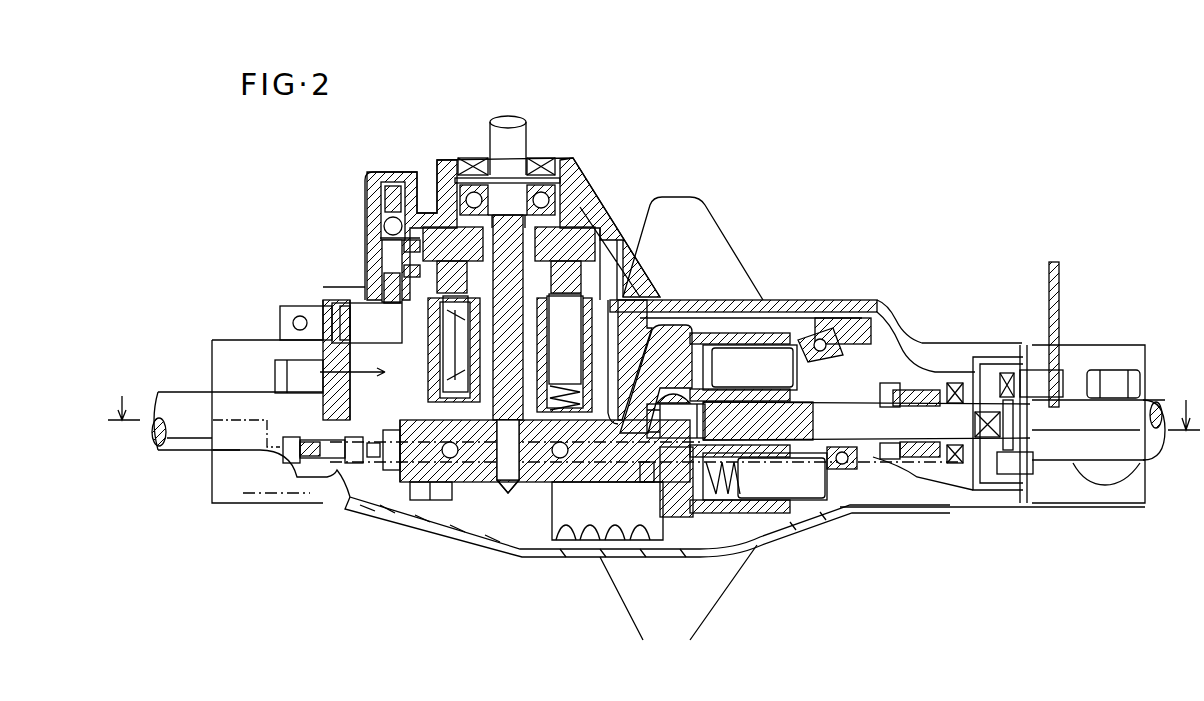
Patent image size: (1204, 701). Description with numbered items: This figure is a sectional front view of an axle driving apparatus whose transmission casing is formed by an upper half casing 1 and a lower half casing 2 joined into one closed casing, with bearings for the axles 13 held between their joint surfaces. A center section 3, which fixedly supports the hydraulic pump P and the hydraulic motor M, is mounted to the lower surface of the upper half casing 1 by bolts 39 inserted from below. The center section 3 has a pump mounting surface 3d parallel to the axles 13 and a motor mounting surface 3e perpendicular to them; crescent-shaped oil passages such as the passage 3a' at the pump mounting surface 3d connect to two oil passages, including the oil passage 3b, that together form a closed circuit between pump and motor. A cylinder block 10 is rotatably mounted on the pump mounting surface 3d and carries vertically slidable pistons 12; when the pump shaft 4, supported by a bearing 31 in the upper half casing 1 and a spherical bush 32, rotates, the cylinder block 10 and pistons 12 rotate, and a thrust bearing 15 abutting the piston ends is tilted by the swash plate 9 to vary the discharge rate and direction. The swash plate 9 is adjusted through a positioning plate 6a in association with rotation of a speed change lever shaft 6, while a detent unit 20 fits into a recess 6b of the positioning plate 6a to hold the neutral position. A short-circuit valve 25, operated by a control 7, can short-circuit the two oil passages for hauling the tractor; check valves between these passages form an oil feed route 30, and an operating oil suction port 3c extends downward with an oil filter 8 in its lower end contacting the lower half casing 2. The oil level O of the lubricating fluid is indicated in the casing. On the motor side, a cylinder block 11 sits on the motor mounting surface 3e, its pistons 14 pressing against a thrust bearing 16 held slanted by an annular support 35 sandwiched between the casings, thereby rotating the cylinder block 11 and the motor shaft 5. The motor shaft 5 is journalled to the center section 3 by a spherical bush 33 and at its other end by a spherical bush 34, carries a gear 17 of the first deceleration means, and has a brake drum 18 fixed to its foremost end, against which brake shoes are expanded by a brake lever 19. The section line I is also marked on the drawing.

The upper half casing 1 is at (693, 300).
The lower half casing 2 is at (475, 547).
The center section 3 is at (493, 481).
The crescent-shaped oil passage 3a' is at (528, 513).
The oil passage 3b is at (367, 510).
The operating oil suction port 3c is at (640, 480).
The pump mounting surface 3d is at (403, 420).
The motor mounting surface 3e is at (748, 530).
The pump shaft 4 is at (512, 126).
The motor shaft 5 is at (827, 410).
The speed change lever shaft 6 is at (300, 306).
The positioning plate 6a is at (390, 273).
The recess 6b is at (398, 243).
The control 7 is at (312, 462).
The oil filter 8 is at (580, 526).
The swash plate 9 is at (608, 250).
The cylinder block 10 is at (422, 362).
The cylinder block 11 is at (798, 523).
The pistons 12 is at (580, 335).
The axles 13 is at (195, 445).
The pistons 14 is at (774, 385).
The thrust bearing 15 is at (540, 270).
The thrust bearing 16 is at (827, 358).
The gear 17 is at (886, 390).
The brake drum 18 is at (1004, 500).
The brake lever 19 is at (1062, 316).
The detent unit 20 is at (386, 236).
The short-circuit valve 25 is at (372, 467).
The oil feed route 30 is at (642, 522).
The bearing 31 is at (555, 197).
The spherical bush 32 is at (463, 533).
The spherical bush 33 is at (662, 421).
The spherical bush 34 is at (918, 462).
The annular support 35 is at (846, 316).
The bolts 39 is at (417, 500).
The section line I is at (654, 400).
The hydraulic motor M is at (750, 316).
The oil level O is at (678, 303).
The hydraulic pump P is at (330, 377).